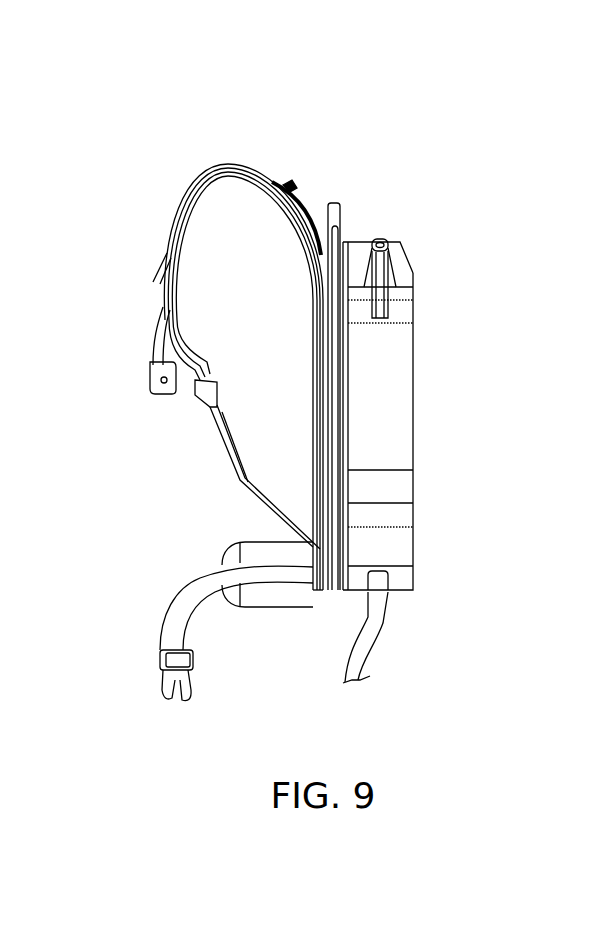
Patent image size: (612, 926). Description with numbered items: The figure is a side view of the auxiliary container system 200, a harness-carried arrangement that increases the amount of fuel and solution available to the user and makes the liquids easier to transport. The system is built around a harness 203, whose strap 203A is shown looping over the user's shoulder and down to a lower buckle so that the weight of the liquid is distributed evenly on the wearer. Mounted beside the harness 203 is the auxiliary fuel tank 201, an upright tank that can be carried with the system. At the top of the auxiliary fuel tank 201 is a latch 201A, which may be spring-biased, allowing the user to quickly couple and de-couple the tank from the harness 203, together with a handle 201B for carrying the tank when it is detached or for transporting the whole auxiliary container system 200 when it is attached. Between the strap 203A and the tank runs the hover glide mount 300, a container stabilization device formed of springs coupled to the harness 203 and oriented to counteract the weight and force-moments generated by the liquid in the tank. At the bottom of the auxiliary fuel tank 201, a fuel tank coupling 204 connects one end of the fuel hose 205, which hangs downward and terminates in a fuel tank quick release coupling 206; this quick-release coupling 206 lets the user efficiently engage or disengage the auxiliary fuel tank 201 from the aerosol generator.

The auxiliary container system 200 is at (356, 406).
The auxiliary fuel tank 201 is at (400, 398).
The latch 201A is at (380, 239).
The handle 201B is at (400, 258).
The harness 203 is at (222, 160).
The strap 203A is at (268, 607).
The fuel tank coupling 204 is at (382, 582).
The fuel hose 205 is at (378, 628).
The fuel tank quick release coupling 206 is at (368, 697).
The hover glide mount 300 is at (333, 202).